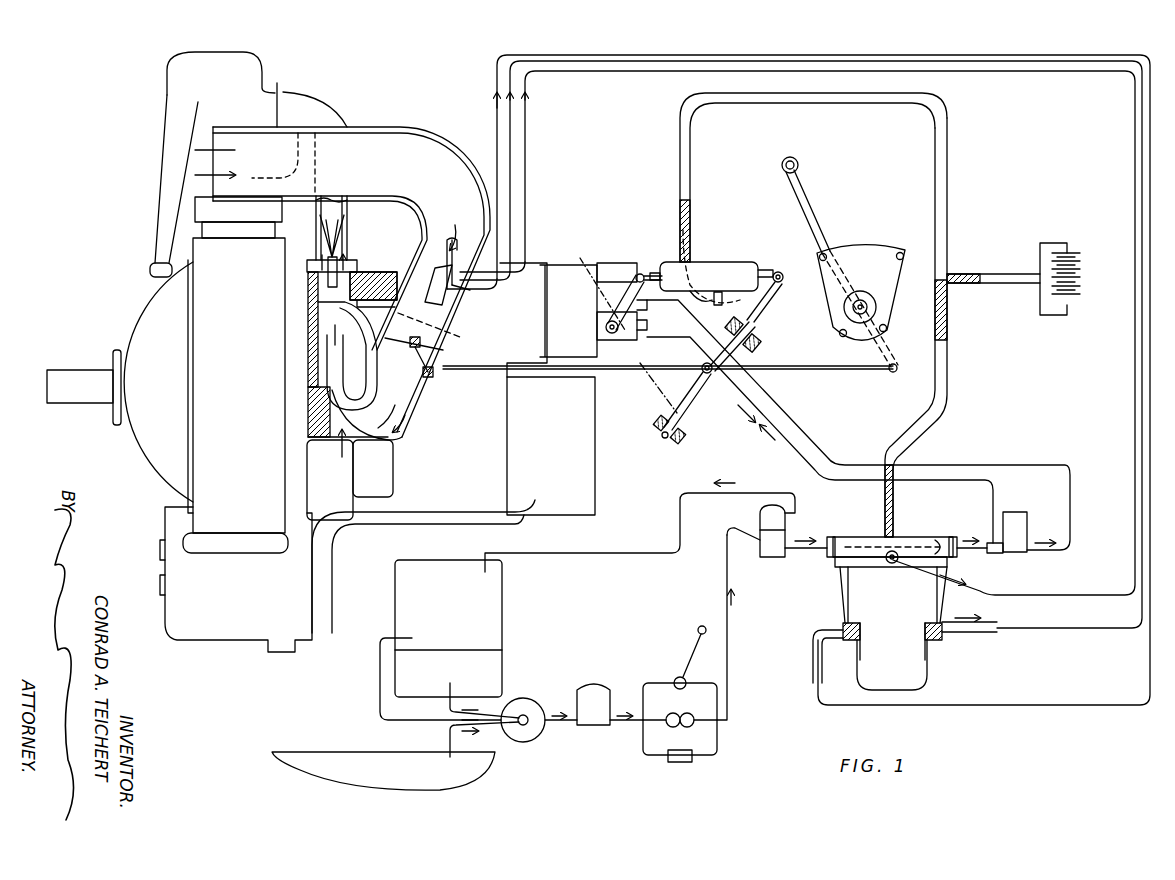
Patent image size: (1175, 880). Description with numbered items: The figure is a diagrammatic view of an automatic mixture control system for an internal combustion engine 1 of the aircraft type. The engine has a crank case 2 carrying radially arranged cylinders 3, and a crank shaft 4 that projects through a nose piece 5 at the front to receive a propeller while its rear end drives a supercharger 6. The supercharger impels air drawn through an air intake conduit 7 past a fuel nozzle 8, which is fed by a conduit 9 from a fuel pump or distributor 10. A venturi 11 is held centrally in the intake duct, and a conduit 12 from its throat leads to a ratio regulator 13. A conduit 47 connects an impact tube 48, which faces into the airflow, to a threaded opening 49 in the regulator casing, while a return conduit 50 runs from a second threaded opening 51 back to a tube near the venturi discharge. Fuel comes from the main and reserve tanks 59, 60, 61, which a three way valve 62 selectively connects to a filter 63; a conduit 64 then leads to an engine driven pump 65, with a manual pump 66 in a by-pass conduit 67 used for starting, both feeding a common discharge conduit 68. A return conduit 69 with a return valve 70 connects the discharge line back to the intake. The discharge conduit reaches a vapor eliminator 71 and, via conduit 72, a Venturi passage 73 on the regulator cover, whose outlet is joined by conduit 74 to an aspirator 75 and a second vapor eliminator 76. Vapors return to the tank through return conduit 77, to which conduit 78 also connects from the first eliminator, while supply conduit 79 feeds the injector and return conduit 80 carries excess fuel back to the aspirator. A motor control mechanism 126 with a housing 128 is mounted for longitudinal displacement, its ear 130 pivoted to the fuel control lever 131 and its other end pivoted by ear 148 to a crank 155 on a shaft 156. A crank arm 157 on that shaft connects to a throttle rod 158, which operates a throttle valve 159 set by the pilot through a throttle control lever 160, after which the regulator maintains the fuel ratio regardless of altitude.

The internal combustion engine 1 is at (145, 237).
The crank case 2 is at (236, 445).
The cylinders 3 is at (203, 200).
The crank shaft 4 is at (75, 382).
The nose piece 5 is at (135, 440).
The supercharger 6 is at (350, 352).
The air intake conduit 7 is at (342, 282).
The fuel nozzle 8 is at (345, 262).
The conduit 9 is at (502, 343).
The fuel pump or distributor 10 is at (613, 272).
The venturi 11 is at (433, 278).
The conduit 12 is at (512, 163).
The ratio regulator 13 is at (838, 602).
The conduit 47 is at (495, 118).
The impact tube 48 is at (462, 262).
The threaded opening 49 is at (845, 642).
The return conduit 50 is at (1040, 650).
The second threaded opening 51 is at (948, 640).
The main fuel tank 59 is at (448, 628).
The fuel tank 60 is at (449, 697).
The reserve fuel tank 61 is at (383, 771).
The three way valve 62 is at (540, 700).
The filter 63 is at (594, 686).
The conduit 64 is at (630, 724).
The engine driven pump 65 is at (672, 712).
The manual pump 66 is at (675, 678).
The by-pass conduit 67 is at (693, 683).
The discharge conduit 68 is at (728, 641).
The return conduit 69 is at (720, 742).
The return valve 70 is at (680, 762).
The vapor eliminator 71 is at (771, 558).
The conduit 72 is at (800, 553).
The Venturi passage 73 is at (858, 545).
The conduit 74 is at (958, 555).
The aspirator 75 is at (993, 556).
The second vapor eliminator 76 is at (1028, 536).
The return conduit 77 is at (912, 488).
The conduit 78 is at (795, 510).
The supply conduit 79 is at (1070, 490).
The return conduit 80 is at (770, 404).
The motor control mechanism 126 is at (722, 255).
The housing 128 is at (725, 280).
The shank or ear 130 is at (646, 270).
The fuel control lever 131 is at (606, 316).
The ear 148 is at (779, 272).
The crank 155 is at (770, 298).
The shaft 156 is at (740, 338).
The crank arm 157 is at (684, 408).
The throttle rod 158 is at (845, 372).
The throttle valve 159 is at (440, 345).
The throttle control lever 160 is at (810, 205).